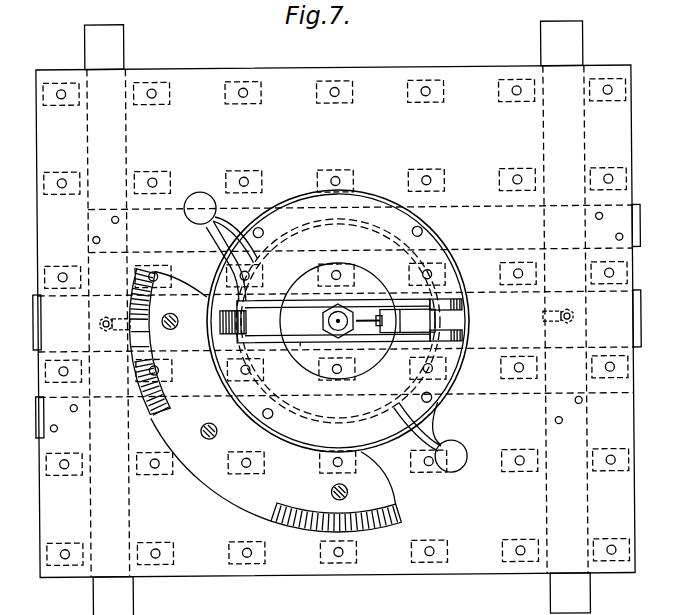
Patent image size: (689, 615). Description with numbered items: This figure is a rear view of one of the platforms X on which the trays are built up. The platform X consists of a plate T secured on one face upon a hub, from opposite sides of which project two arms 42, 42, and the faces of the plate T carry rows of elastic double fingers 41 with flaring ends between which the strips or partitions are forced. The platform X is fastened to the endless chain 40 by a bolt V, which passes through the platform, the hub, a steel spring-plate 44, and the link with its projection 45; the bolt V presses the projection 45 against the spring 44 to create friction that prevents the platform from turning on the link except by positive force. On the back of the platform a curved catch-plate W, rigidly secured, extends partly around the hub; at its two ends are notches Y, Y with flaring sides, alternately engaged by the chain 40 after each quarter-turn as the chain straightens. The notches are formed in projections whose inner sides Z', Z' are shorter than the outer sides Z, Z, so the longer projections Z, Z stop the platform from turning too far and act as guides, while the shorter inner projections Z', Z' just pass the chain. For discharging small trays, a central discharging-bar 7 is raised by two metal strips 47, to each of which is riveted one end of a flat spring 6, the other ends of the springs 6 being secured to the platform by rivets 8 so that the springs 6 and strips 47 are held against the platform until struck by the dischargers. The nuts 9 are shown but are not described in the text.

The flat spring 6 is at (35, 425).
The central discharging-bar 7 is at (33, 325).
The rivets 8 is at (337, 326).
The clamp nut 9 is at (105, 331).
The endless chain 40 is at (341, 321).
The elastic double fingers 41 is at (369, 321).
The arms 42 is at (325, 332).
The spring-plate 44 is at (338, 321).
The projection 45 is at (307, 353).
The metal strips 47 is at (338, 318).
The plate T is at (335, 321).
The bolt V is at (350, 300).
The catch-plate W is at (273, 396).
The platform X is at (335, 306).
The notches Y is at (158, 332).
The outer sides of projections Z is at (274, 385).
The inner sides of projections Z' is at (215, 435).